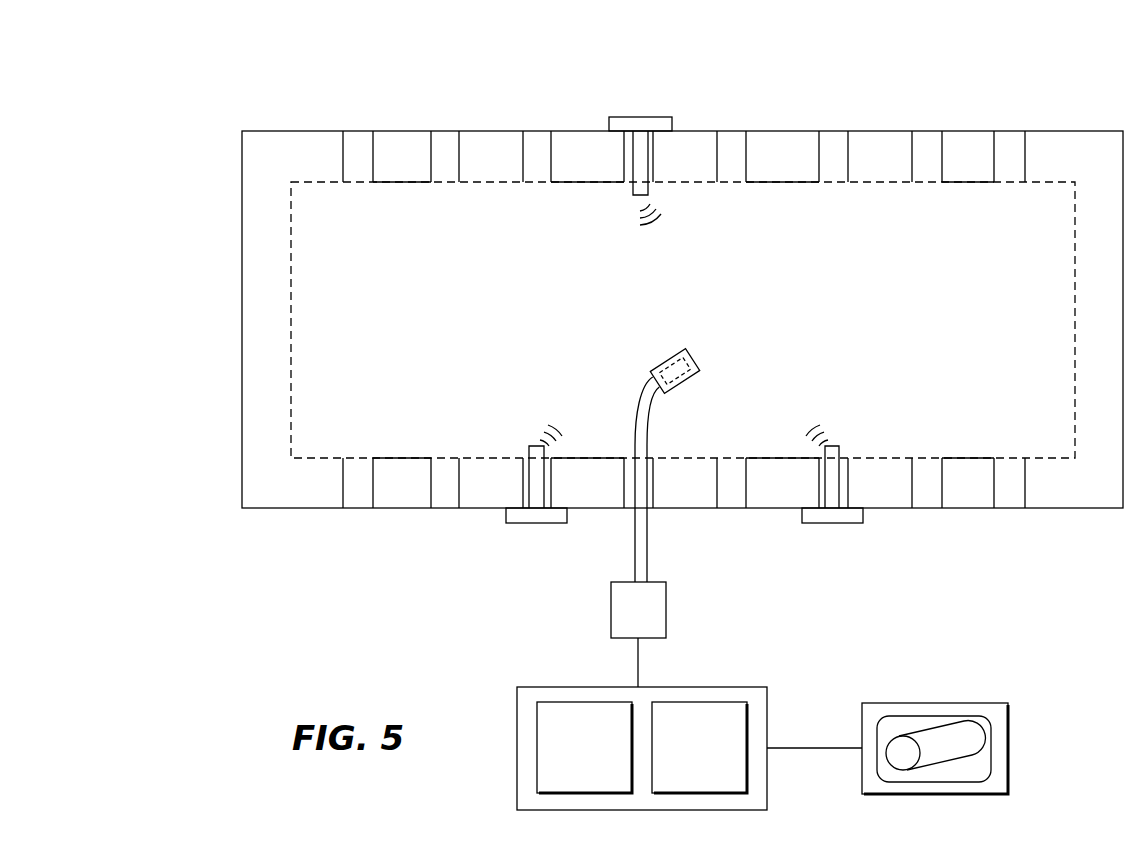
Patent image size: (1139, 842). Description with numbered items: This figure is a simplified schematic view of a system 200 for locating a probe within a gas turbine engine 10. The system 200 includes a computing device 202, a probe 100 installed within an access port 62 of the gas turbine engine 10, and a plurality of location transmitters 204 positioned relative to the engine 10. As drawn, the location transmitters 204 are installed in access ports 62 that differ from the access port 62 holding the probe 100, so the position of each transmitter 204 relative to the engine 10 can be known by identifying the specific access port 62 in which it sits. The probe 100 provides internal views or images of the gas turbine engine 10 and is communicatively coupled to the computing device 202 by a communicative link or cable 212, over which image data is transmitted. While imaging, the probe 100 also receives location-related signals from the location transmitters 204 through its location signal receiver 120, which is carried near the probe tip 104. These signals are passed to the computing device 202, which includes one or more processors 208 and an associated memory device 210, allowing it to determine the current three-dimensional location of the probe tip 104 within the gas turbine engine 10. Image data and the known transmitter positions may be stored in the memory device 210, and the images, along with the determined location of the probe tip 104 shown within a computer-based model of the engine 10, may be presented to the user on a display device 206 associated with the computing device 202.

The system for locating a probe 200 is at (120, 96).
The gas turbine engine 10 is at (275, 130).
The access port 62 is at (431, 152).
The location transmitter 204 is at (645, 118).
The probe 100 is at (634, 410).
The probe tip 104 is at (686, 352).
The location signal receiver 120 is at (662, 366).
The computing device 202 is at (517, 687).
The processor 208 is at (584, 747).
The memory device 210 is at (699, 747).
The communicative link or cable 212 is at (640, 652).
The display device 206 is at (958, 703).